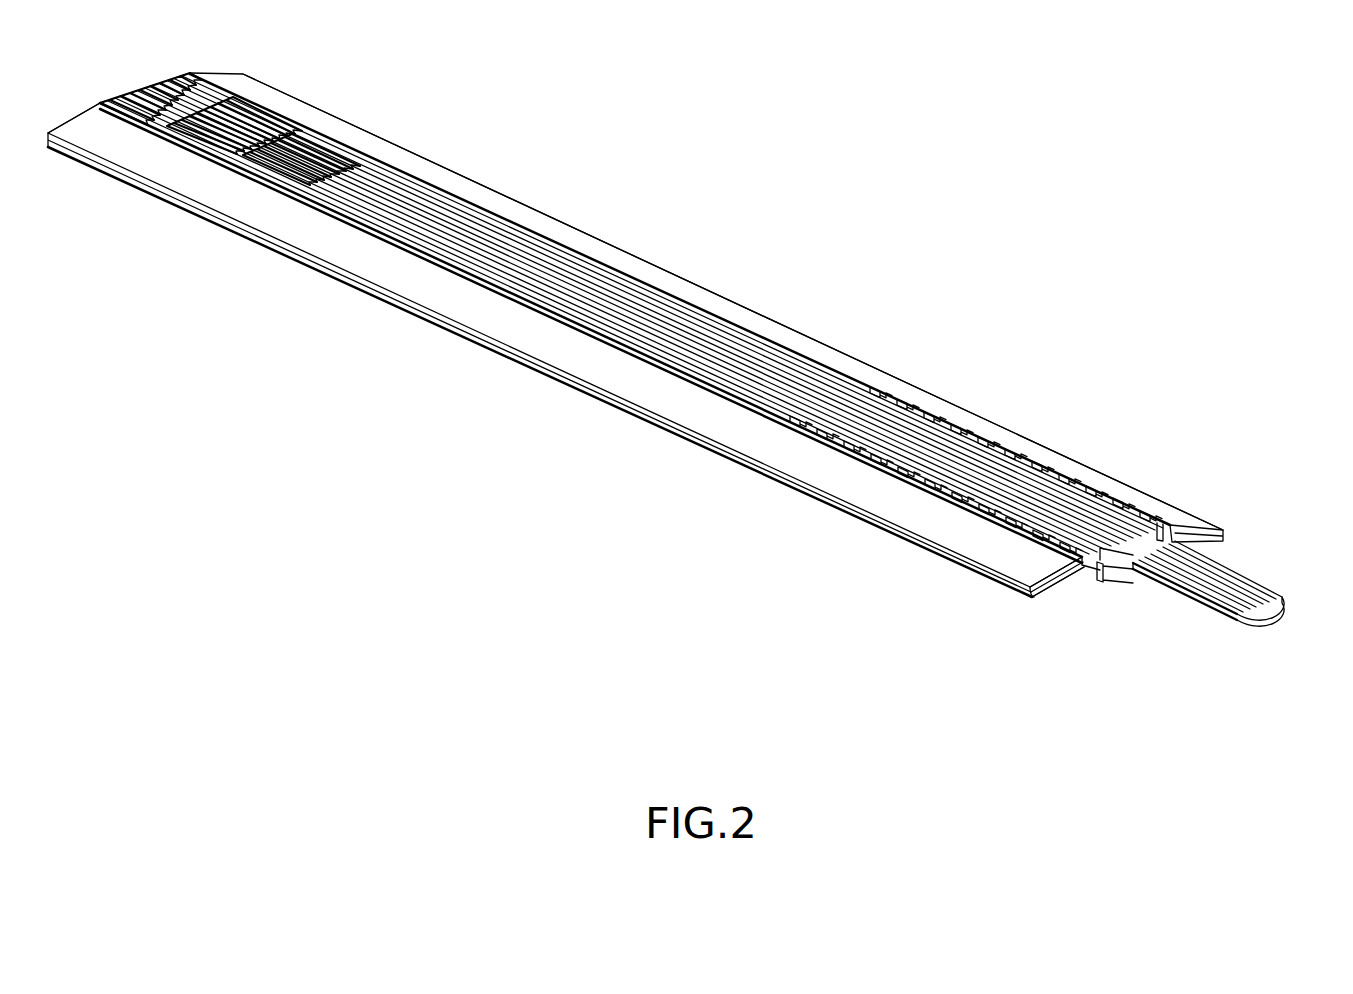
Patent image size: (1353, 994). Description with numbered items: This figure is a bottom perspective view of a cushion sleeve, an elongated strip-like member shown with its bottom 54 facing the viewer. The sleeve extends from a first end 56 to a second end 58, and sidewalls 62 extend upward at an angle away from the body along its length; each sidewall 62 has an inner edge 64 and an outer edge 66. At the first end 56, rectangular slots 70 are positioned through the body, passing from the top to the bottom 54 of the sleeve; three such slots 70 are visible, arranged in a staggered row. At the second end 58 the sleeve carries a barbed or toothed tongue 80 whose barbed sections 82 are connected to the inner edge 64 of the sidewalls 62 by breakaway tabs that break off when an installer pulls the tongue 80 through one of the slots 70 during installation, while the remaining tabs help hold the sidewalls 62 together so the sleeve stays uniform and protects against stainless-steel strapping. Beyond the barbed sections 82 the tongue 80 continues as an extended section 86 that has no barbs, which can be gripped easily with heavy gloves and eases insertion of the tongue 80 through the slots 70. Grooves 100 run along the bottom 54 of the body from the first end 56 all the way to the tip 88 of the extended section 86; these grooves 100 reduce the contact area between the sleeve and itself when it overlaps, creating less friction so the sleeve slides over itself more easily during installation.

The bottom 54 is at (520, 237).
The first end 56 is at (148, 87).
The second end 58 is at (1018, 566).
The sidewalls 62 is at (685, 290).
The inner edge 64 is at (625, 265).
The outer edge 66 is at (760, 315).
The slots 70 is at (358, 165).
The tongue 80 is at (1035, 485).
The barbed sections 82 is at (1128, 508).
The extended section 86 is at (1228, 585).
The tip 88 is at (1272, 613).
The grooves 100 is at (1195, 577).